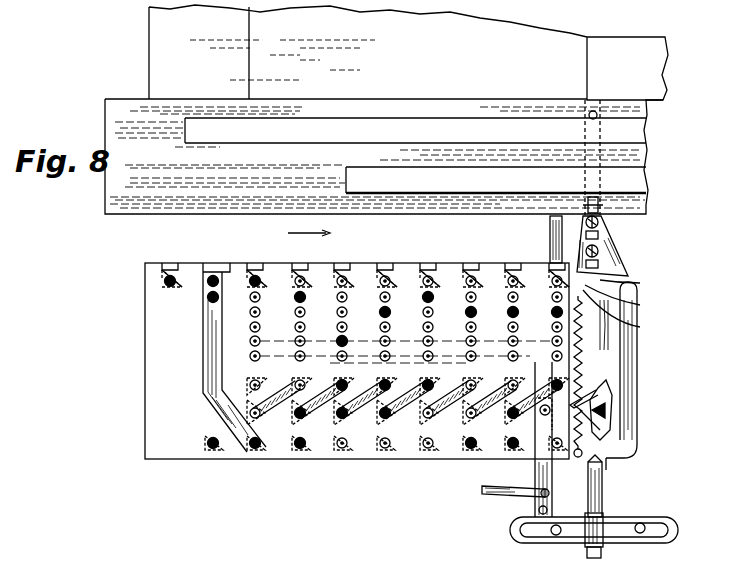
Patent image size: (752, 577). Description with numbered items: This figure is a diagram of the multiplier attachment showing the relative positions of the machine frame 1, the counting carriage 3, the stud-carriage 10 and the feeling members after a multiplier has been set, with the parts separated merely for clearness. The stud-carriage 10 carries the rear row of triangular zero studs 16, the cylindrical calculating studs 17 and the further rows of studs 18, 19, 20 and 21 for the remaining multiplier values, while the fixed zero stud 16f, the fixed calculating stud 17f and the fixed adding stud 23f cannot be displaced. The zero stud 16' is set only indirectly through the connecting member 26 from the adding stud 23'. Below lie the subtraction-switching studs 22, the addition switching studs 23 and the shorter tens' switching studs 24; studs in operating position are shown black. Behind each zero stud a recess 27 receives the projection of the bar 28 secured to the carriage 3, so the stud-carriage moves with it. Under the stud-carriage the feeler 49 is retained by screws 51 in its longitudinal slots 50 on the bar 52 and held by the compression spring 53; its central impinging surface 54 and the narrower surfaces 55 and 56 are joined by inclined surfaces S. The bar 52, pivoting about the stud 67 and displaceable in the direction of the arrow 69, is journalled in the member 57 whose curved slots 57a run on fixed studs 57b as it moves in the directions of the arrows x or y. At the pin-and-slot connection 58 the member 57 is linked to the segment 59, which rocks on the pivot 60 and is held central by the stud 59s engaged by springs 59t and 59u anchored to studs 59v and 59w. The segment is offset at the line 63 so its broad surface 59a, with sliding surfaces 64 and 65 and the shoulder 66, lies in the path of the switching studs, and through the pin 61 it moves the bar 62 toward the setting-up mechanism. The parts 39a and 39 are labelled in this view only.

The machine frame 1 is at (660, 69).
The carriage 3 is at (640, 203).
The stud-carriage 10 is at (369, 459).
The zero studs 16 is at (419, 283).
The zero stud 16' is at (226, 262).
The fixed zero stud 16f is at (165, 284).
The calculating studs 17 is at (563, 297).
The fixed calculating stud 17f is at (210, 298).
The studs 18 is at (563, 312).
The studs 19 is at (563, 327).
The studs 20 is at (563, 341).
The studs 21 is at (563, 356).
The subtraction-switching studs 22 is at (408, 380).
The addition switching studs 23 is at (386, 448).
The adding stud 23' is at (253, 461).
The fixed adding stud 23f is at (214, 449).
The tens' switching studs 24 is at (403, 407).
The connecting member 26 is at (212, 365).
The recess 27 is at (428, 262).
The spur or bar 28 is at (551, 243).
The feeler 49 is at (595, 246).
The longitudinal slots 50 is at (600, 236).
The screws 51 is at (600, 222).
The bar 52 is at (633, 383).
The compression spring 53 is at (600, 198).
The central impinging surface 54 is at (640, 305).
The impinging surface 55 is at (640, 283).
The impinging surface 56 is at (640, 327).
The member 57 is at (540, 538).
The slots 57a is at (572, 530).
The fixed studs 57b is at (557, 536).
The pin-and-slot connection 58 is at (549, 510).
The segment 59 is at (537, 472).
The broad surface 59a is at (580, 410).
The stud 59s is at (600, 394).
The spring 59t is at (606, 340).
The spring 59u is at (606, 489).
The stud 59v is at (606, 325).
The stud 59w is at (573, 387).
The pivot 60 is at (545, 404).
The pin 61 is at (557, 492).
The bar 62 is at (496, 496).
The offset line 63 is at (544, 415).
The sliding surface 64 is at (632, 459).
The sliding surface 65 is at (594, 396).
The lug or shoulder 66 is at (606, 412).
The stud 67 is at (594, 111).
The arrow 69 is at (661, 122).
The inclined surfaces S is at (602, 284).
The arrow x is at (530, 545).
The arrow y is at (660, 545).
The lever 39a is at (540, 571).
The lever 39 is at (623, 571).